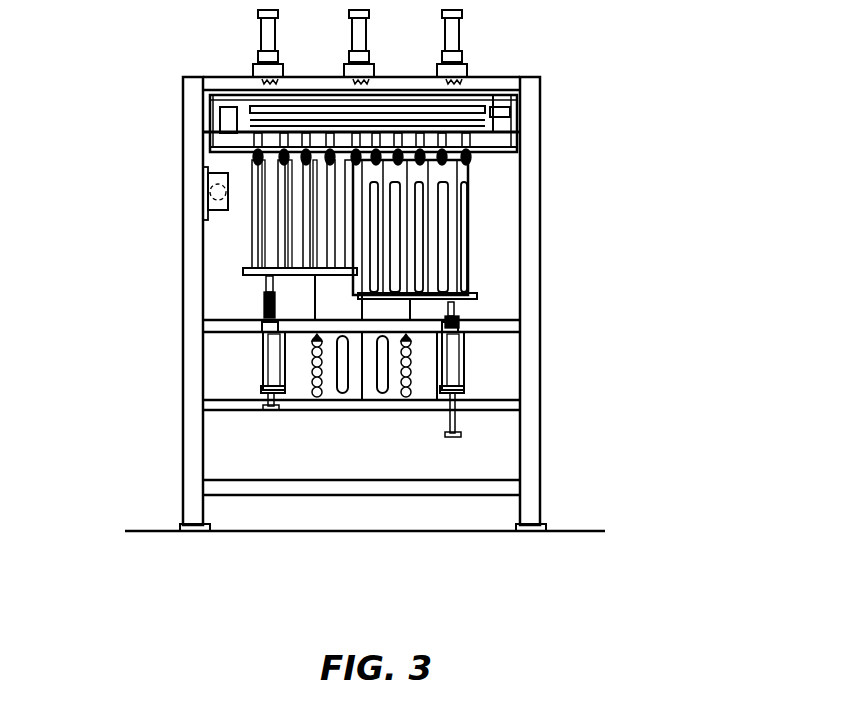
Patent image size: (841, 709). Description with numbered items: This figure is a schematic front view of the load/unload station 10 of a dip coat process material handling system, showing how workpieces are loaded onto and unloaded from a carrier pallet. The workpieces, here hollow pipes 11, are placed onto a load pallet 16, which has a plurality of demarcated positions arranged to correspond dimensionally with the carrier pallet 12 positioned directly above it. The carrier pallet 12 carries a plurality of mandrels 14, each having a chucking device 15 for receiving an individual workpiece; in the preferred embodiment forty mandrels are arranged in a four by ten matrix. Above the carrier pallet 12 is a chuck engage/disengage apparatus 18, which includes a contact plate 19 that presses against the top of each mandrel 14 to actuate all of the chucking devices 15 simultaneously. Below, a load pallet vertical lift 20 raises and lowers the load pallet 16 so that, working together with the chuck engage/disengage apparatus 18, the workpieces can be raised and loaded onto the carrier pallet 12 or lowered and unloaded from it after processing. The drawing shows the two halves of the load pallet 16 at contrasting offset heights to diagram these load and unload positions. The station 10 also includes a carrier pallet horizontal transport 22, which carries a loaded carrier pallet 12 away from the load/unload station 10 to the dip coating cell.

The load/unload station 10 is at (136, 69).
The hollow pipes 11 is at (467, 223).
The carrier pallet 12 is at (483, 128).
The mandrels 14 is at (465, 152).
The chucking device 15 is at (470, 164).
The load pallet 16 is at (247, 270).
The chuck engage/disengage apparatus 18 is at (484, 51).
The contact plate 19 is at (383, 110).
The load pallet vertical lift 20 is at (473, 372).
The carrier pallet horizontal transport 22 is at (207, 202).